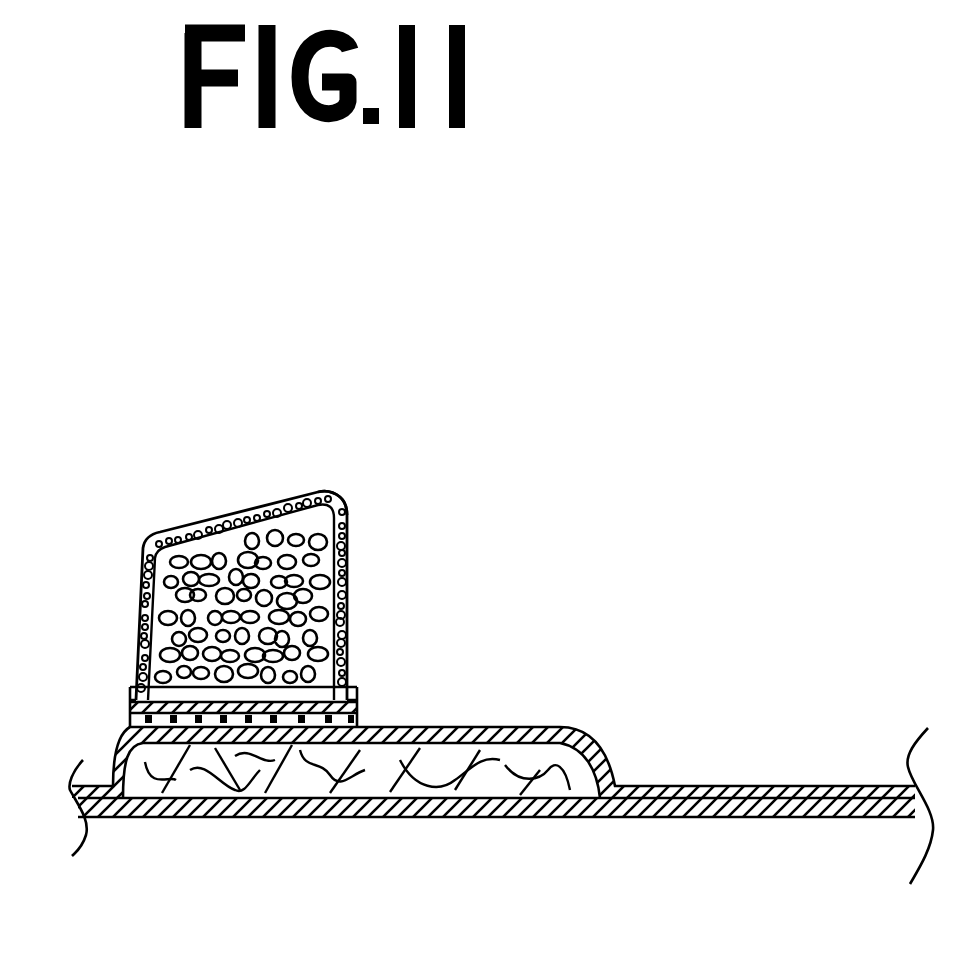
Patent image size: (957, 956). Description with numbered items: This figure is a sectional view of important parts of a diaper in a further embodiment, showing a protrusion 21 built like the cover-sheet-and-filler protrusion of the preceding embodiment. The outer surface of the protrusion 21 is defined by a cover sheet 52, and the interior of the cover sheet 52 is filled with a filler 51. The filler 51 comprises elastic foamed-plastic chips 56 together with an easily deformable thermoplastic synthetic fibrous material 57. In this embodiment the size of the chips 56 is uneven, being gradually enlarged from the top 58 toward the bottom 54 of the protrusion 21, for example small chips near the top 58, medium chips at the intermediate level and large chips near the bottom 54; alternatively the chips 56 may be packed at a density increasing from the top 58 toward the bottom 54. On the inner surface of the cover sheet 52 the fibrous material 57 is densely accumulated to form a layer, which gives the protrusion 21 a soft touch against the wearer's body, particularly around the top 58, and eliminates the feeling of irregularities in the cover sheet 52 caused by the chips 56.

The protrusion 21 is at (326, 494).
The filler 51 is at (475, 532).
The cover sheet 52 is at (347, 527).
The bottom 54 is at (210, 692).
The chips 56 is at (348, 575).
The fibrous material 57 is at (348, 632).
The top 58 is at (218, 523).